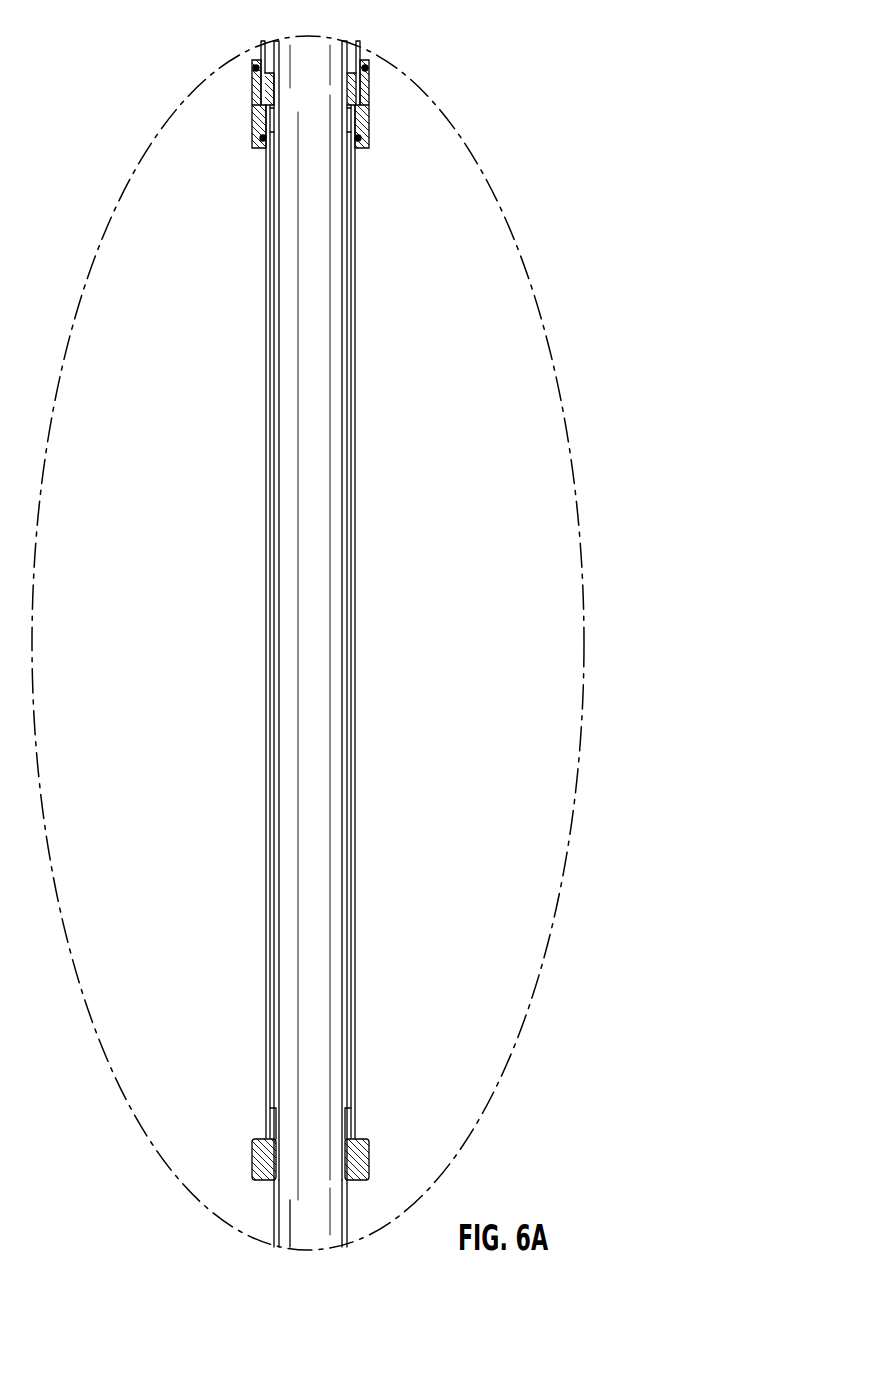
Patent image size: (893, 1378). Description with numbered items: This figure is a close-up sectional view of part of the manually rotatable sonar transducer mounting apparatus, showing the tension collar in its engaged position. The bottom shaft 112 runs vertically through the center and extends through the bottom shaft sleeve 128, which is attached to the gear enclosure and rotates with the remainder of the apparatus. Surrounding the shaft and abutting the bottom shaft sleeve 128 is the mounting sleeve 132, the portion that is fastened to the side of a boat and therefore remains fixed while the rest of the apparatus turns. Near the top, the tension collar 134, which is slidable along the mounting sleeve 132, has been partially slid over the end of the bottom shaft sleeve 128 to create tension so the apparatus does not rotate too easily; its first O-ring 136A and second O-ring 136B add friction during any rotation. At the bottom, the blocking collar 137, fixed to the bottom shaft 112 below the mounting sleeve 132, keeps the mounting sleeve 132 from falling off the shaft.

The bottom shaft 112 is at (349, 1205).
The bottom shaft sleeve 128 is at (261, 46).
The mounting sleeve 132 is at (357, 741).
The tension collar 134 is at (370, 115).
The first O-ring 136A is at (253, 68).
The second O-ring 136B is at (260, 140).
The blocking collar 137 is at (258, 1157).